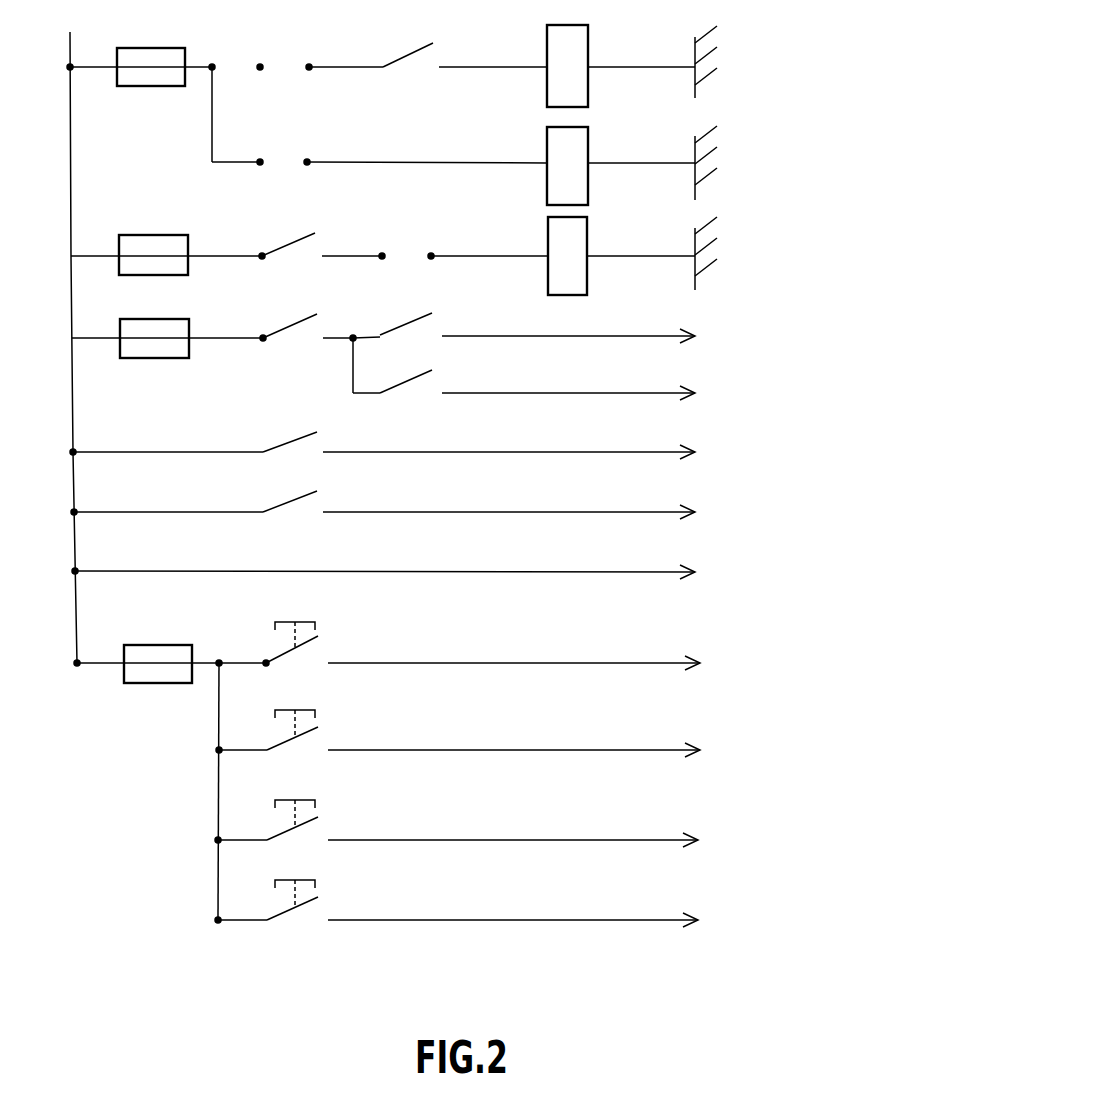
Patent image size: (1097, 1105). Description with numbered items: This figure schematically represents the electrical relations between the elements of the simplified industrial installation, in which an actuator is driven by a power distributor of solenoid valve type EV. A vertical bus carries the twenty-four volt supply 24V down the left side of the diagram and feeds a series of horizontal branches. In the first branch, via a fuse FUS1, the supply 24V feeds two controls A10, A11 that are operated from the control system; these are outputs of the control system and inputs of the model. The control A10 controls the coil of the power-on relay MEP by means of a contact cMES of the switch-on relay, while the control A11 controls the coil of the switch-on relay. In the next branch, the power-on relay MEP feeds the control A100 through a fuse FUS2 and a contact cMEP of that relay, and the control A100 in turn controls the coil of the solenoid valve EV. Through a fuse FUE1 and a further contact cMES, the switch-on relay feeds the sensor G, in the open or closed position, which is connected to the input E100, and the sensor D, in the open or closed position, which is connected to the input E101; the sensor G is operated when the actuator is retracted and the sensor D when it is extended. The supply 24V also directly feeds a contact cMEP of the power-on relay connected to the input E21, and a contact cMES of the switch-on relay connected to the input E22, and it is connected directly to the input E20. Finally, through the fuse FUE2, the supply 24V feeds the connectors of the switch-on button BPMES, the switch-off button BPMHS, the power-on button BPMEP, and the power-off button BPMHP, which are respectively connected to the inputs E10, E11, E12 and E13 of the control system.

The 24 volt supply 24V is at (71, 332).
The fuse FUS1 is at (139, 67).
The fuse FUS2 is at (166, 255).
The fuse FUE1 is at (169, 338).
The fuse FUE2 is at (170, 782).
The control A10 is at (296, 53).
The control A11 is at (379, 116).
The control A100 is at (463, 243).
The contact of the switch-on relay MES cMES is at (405, 263).
The contact of the power-on relay MEP cMEP is at (320, 329).
The power-on relay MEP is at (632, 115).
The solenoid valve EV is at (632, 256).
The sensor G is at (391, 312).
The sensor D is at (392, 365).
The input E100 is at (607, 338).
The input E101 is at (607, 396).
The input E21 is at (417, 455).
The input E22 is at (418, 515).
The input E20 is at (418, 573).
The input E10 is at (547, 663).
The input E11 is at (549, 753).
The input E12 is at (547, 843).
The input E13 is at (547, 923).
The switch-on button BPMES is at (301, 628).
The switch-off button BPMHS is at (280, 716).
The power-on button BPMEP is at (277, 806).
The power-off button BPMHP is at (279, 886).